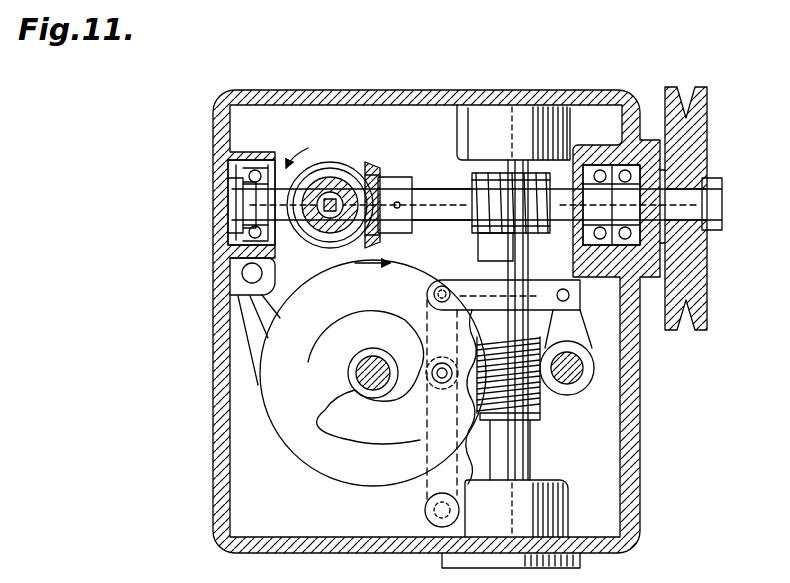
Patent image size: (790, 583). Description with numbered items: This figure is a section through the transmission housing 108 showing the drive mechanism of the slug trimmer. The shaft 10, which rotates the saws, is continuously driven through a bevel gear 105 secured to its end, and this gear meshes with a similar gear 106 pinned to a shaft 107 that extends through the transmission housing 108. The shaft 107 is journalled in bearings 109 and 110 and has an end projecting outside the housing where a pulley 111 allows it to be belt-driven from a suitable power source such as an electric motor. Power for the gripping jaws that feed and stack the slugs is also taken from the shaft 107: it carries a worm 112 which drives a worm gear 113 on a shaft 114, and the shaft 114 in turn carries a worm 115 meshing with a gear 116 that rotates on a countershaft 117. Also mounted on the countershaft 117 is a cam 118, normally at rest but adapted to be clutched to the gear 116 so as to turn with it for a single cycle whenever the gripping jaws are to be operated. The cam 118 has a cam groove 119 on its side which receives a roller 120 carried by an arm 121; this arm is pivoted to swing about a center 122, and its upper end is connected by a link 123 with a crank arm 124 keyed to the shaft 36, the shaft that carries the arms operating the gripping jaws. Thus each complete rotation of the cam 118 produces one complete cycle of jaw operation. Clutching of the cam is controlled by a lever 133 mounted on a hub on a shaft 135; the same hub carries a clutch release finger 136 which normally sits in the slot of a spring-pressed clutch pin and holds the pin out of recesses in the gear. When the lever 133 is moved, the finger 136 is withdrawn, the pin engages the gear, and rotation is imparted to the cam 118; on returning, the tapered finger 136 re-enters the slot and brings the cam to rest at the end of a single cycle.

The shaft 10 is at (322, 222).
The shaft 36 is at (576, 372).
The bevel gear 105 is at (318, 160).
The gear 106 is at (372, 168).
The shaft 107 is at (422, 188).
The transmission housing 108 is at (406, 97).
The bearing 109 is at (257, 166).
The bearing 110 is at (600, 167).
The pulley 111 is at (683, 328).
The worm 112 is at (476, 234).
The worm gear 113 is at (470, 228).
The shaft 114 is at (529, 262).
The worm 115 is at (540, 404).
The gear 116 is at (478, 438).
The countershaft 117 is at (368, 370).
The cam 118 is at (316, 464).
The cam groove 119 is at (360, 406).
The roller 120 is at (448, 391).
The arm 121 is at (428, 462).
The center 122 is at (440, 512).
The link 123 is at (480, 292).
The crank arm 124 is at (578, 326).
The lever 133 is at (258, 340).
The shaft 135 is at (246, 273).
The clutch release finger 136 is at (260, 303).